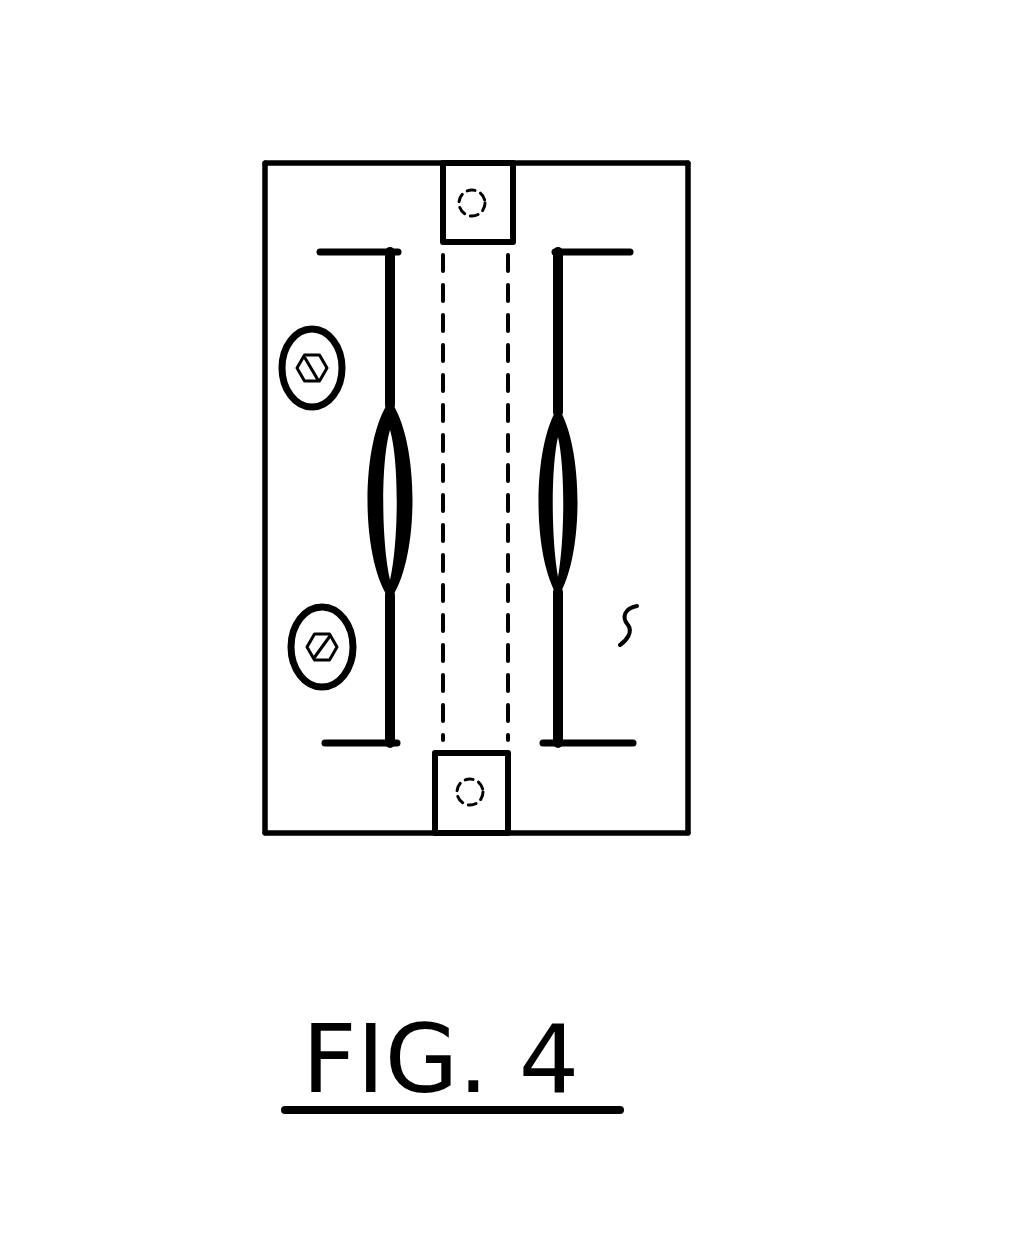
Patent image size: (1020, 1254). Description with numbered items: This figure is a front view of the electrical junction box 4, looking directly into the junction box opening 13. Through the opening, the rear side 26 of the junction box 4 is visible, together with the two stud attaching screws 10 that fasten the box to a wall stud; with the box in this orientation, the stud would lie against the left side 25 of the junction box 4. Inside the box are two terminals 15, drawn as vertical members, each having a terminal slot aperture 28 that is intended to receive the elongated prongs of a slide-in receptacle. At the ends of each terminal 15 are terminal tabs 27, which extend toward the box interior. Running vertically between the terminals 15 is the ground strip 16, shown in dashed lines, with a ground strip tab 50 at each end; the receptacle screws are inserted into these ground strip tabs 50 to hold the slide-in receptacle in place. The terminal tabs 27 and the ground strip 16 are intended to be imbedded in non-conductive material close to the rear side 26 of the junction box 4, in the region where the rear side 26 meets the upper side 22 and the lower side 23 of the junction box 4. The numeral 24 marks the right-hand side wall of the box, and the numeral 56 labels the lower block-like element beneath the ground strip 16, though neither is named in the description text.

The junction box 4 is at (617, 135).
The stud attaching screws 10 is at (283, 370).
The junction box opening 13 is at (633, 472).
The terminals 15 is at (380, 298).
The ground strip 16 is at (516, 268).
The upper side 22 is at (355, 140).
The lower side 23 is at (627, 847).
The right edge 24 is at (700, 782).
The left side 25 is at (262, 588).
The rear side 26 is at (633, 620).
The terminal tabs 27 is at (348, 240).
The terminal slot aperture 28 is at (360, 492).
The ground strip tabs 50 is at (437, 208).
The lower block 56 is at (435, 780).